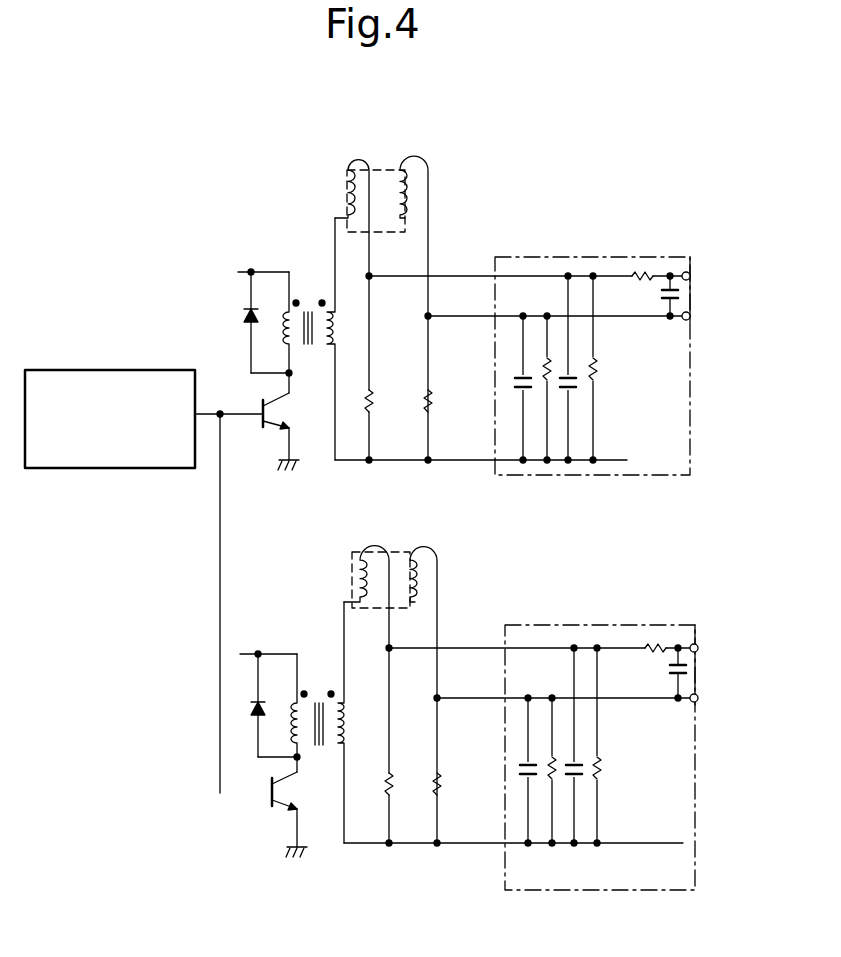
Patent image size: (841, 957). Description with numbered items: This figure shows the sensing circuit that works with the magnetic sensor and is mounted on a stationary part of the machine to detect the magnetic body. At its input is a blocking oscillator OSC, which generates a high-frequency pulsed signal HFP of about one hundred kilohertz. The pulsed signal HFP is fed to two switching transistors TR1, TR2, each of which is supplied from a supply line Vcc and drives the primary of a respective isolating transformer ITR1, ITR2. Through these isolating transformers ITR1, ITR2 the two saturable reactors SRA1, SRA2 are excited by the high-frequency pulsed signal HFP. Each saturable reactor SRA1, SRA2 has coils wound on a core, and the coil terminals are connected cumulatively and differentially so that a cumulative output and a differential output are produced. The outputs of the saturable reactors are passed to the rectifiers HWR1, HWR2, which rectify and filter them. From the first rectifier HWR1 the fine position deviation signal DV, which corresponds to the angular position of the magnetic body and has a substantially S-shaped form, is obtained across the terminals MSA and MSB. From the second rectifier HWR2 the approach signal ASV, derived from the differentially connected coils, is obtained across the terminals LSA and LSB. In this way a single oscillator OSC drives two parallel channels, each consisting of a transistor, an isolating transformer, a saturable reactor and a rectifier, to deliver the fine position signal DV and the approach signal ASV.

The blocking oscillator OSC is at (110, 444).
The high-frequency pulsed signal HFP is at (200, 603).
The supply voltage Vcc is at (261, 449).
The isolating transformer ITR1 is at (309, 339).
The switching transistor TR1 is at (294, 431).
The saturable reactor SRA1 is at (485, 289).
The rectifier HWR1 is at (688, 478).
The terminal MSA is at (682, 263).
The fine position deviation signal DV is at (692, 296).
The terminal MSB is at (699, 319).
The isolating transformer ITR2 is at (317, 722).
The switching transistor TR2 is at (302, 814).
The saturable reactor SRA2 is at (452, 667).
The rectifier HWR2 is at (658, 570).
The terminal LSA is at (690, 649).
The approach signal ASV is at (704, 673).
The terminal LSB is at (704, 699).